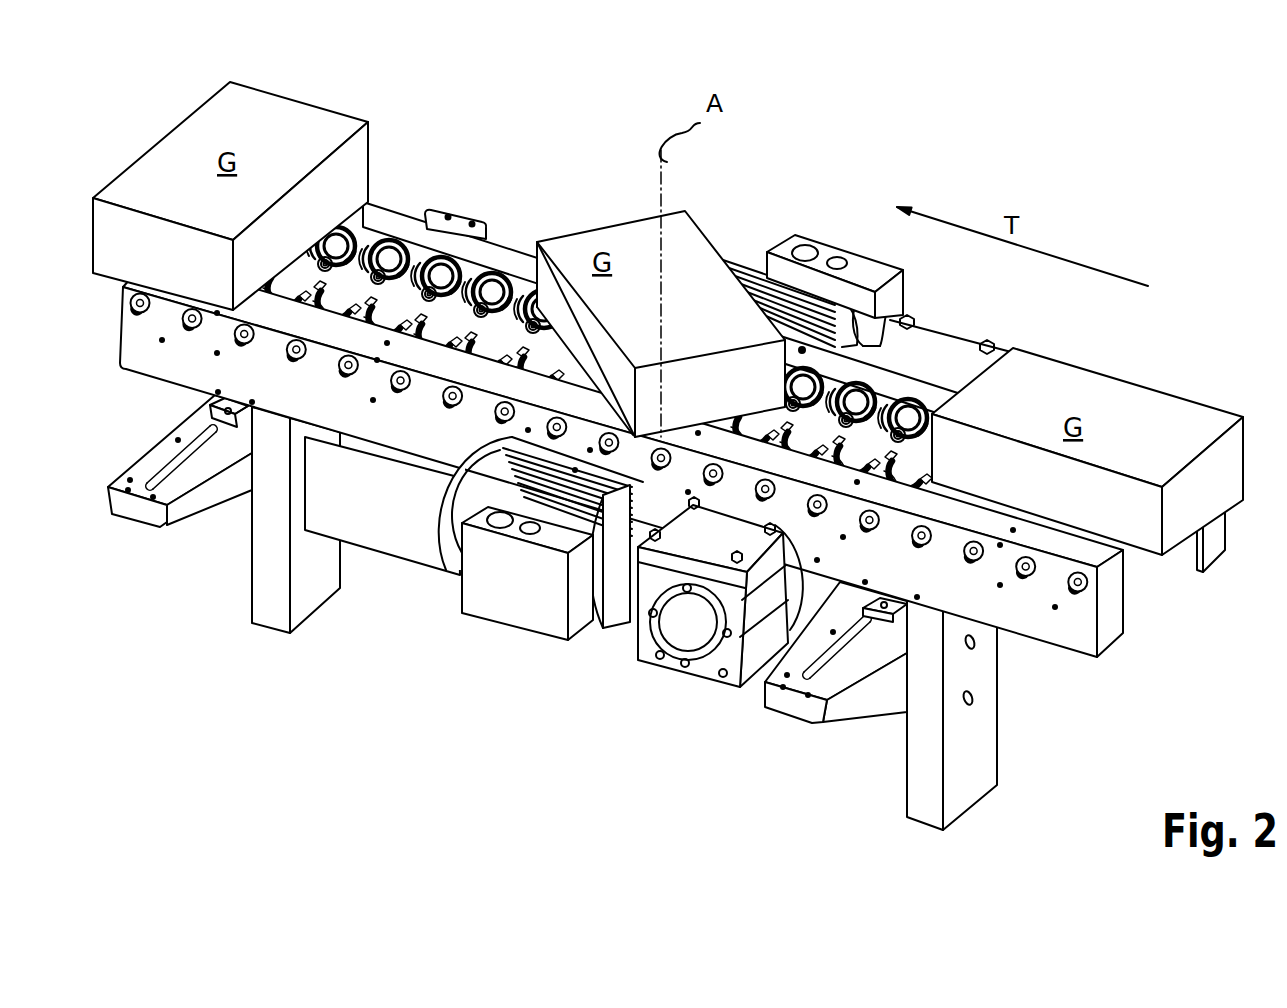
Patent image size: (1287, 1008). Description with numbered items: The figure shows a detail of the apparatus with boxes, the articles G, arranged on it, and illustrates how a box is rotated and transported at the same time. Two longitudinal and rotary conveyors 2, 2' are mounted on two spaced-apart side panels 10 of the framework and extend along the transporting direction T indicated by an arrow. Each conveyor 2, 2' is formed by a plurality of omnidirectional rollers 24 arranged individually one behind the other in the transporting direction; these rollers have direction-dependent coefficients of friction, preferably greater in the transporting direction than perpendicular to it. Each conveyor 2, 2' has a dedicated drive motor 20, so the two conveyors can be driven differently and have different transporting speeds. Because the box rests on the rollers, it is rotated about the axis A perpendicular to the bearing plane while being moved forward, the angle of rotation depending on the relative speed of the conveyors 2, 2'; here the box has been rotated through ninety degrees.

The longitudinal and rotary conveyor 2 is at (690, 319).
The longitudinal and rotary conveyor 2' is at (621, 472).
The omnidirectional roller 24 is at (397, 245).
The drive motor 20 is at (512, 603).
The side panel 10 is at (1123, 617).